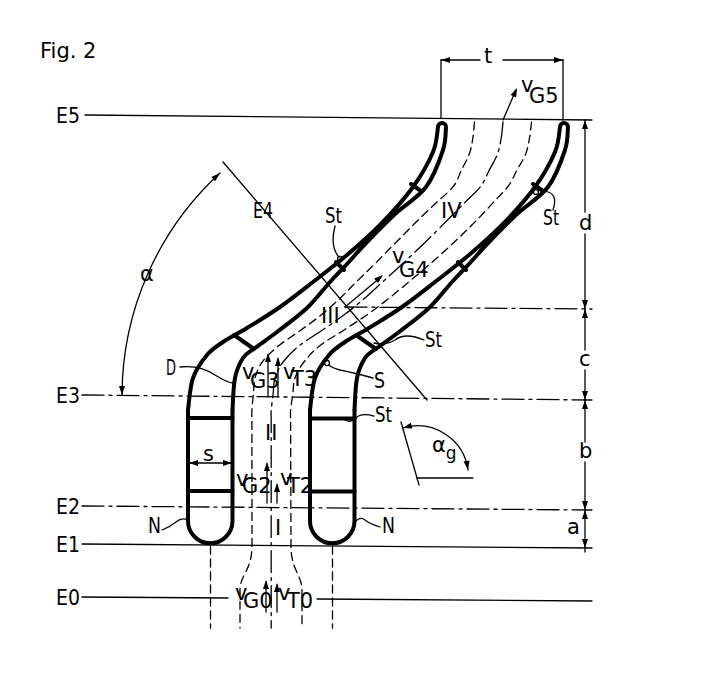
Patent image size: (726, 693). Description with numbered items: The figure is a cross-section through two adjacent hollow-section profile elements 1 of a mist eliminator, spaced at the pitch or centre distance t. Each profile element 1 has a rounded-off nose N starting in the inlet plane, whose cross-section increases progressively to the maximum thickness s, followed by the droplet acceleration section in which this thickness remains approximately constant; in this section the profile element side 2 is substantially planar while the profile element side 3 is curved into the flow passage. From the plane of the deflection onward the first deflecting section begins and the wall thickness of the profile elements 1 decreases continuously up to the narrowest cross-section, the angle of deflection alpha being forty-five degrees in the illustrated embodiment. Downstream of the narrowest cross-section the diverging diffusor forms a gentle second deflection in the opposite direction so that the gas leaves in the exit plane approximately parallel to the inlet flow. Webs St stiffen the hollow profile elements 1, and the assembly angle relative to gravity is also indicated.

The profile element 1 is at (255, 317).
The profile element side 2 is at (188, 443).
The profile element side 3 is at (356, 457).